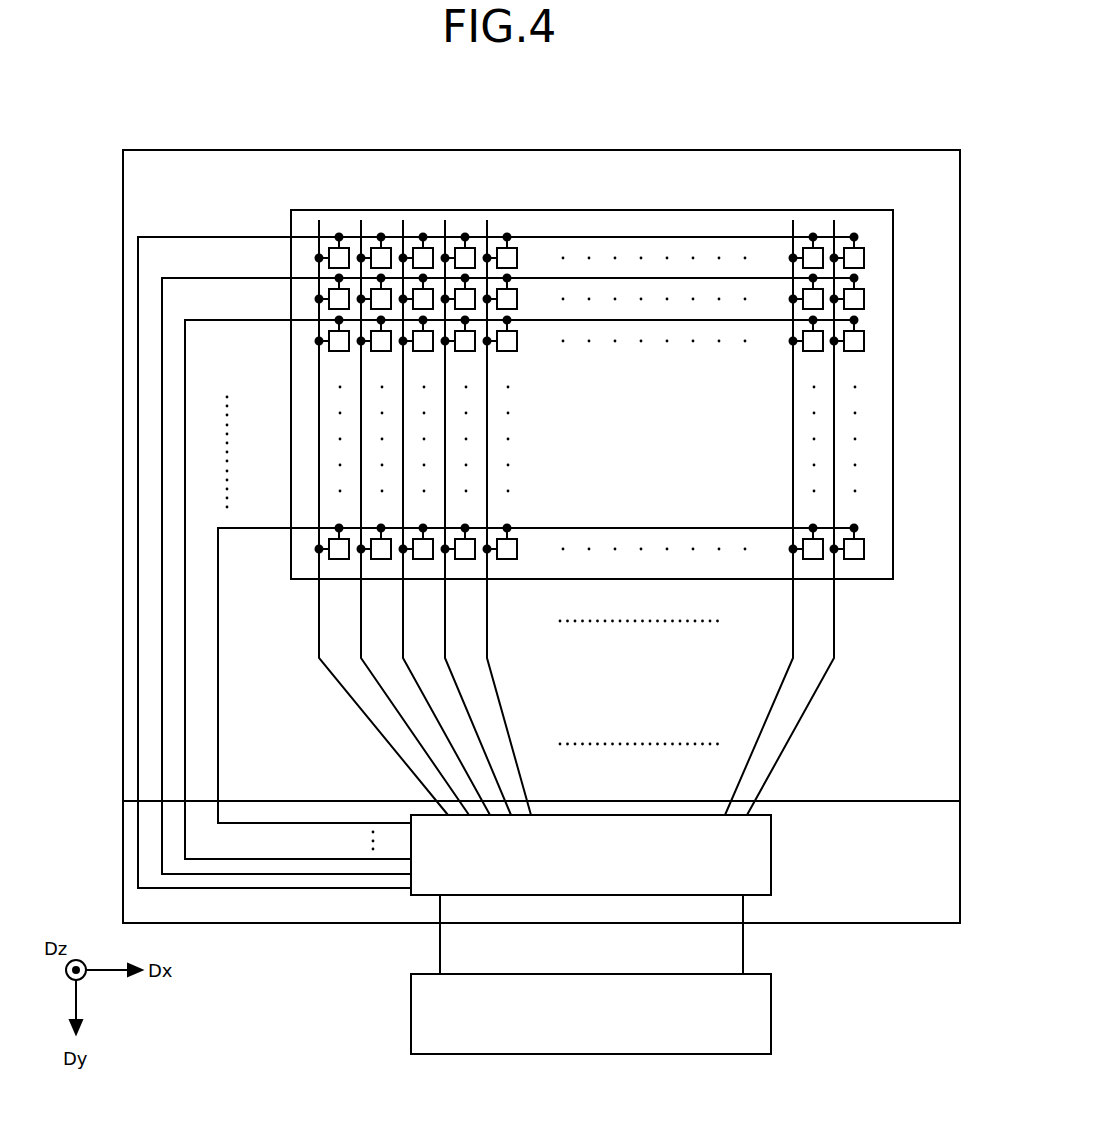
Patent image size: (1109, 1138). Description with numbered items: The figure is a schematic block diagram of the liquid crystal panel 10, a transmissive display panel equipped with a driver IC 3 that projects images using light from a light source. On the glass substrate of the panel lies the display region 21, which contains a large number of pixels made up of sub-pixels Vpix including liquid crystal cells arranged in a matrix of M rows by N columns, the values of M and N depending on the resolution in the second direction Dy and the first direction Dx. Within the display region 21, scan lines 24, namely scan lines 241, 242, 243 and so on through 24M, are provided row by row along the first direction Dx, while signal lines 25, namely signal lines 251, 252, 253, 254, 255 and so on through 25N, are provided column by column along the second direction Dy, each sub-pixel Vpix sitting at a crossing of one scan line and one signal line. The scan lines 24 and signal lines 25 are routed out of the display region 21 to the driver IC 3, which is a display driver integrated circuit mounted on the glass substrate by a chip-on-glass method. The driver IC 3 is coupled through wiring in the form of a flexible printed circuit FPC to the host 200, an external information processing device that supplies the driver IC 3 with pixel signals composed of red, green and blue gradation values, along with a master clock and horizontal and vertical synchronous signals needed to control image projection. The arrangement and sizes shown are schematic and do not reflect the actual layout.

The liquid crystal panel 10 is at (577, 150).
The display region 21 is at (893, 579).
The scan lines 24 is at (543, 527).
The scan line 241 is at (207, 236).
The scan line 242 is at (254, 278).
The scan line 243 is at (237, 322).
The scan line 24M is at (843, 528).
The signal lines 25 is at (565, 517).
The signal line 251 is at (318, 592).
The signal line 252 is at (361, 598).
The signal line 253 is at (401, 633).
The signal line 254 is at (445, 590).
The signal line 255 is at (487, 640).
The signal line 25N is at (834, 630).
The sub-pixel Vpix is at (516, 347).
The driver IC 3 is at (771, 840).
The flexible printed circuits FPC is at (743, 938).
The host 200 is at (771, 1012).